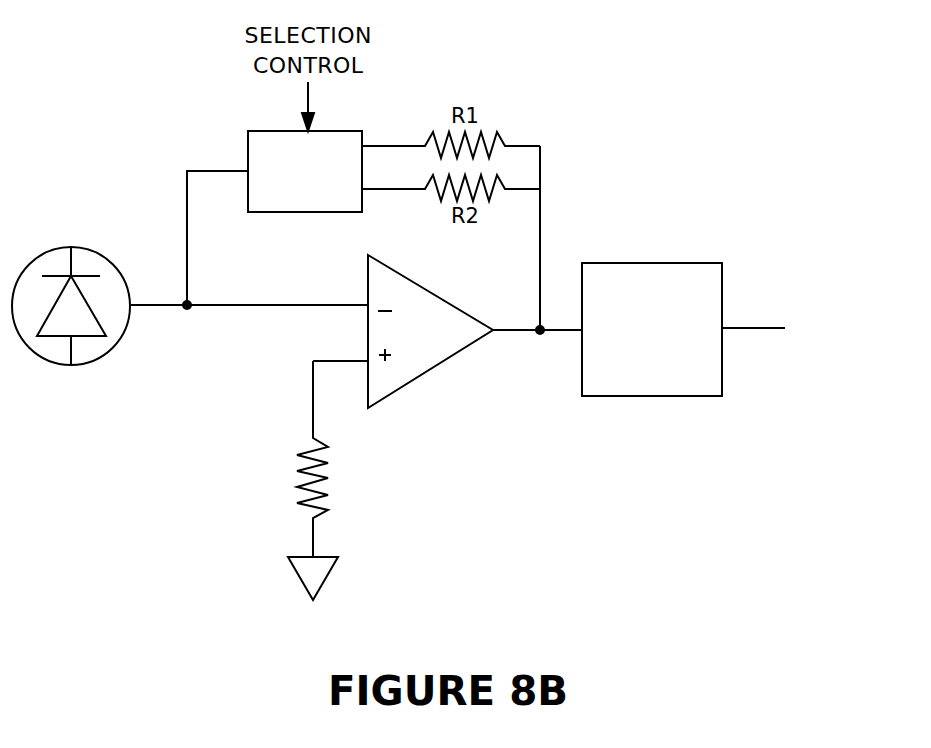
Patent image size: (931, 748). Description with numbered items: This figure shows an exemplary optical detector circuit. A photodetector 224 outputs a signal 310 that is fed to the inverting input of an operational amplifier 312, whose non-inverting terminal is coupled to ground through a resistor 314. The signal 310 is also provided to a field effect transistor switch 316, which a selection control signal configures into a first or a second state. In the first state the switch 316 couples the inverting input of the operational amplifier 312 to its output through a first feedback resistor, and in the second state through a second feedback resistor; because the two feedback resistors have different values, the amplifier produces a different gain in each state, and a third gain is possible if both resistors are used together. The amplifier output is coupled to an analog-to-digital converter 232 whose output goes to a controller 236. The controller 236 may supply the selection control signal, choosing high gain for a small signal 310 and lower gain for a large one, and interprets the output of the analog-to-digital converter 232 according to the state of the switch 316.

The photodetector 224 is at (107, 353).
The signal 310 is at (154, 303).
The operational amplifier 312 is at (398, 391).
The resistor 314 is at (282, 480).
The field effect transistor (FET) switch 316 is at (248, 153).
The analog-to-digital converter 232 is at (652, 329).
The controller 236 is at (808, 283).